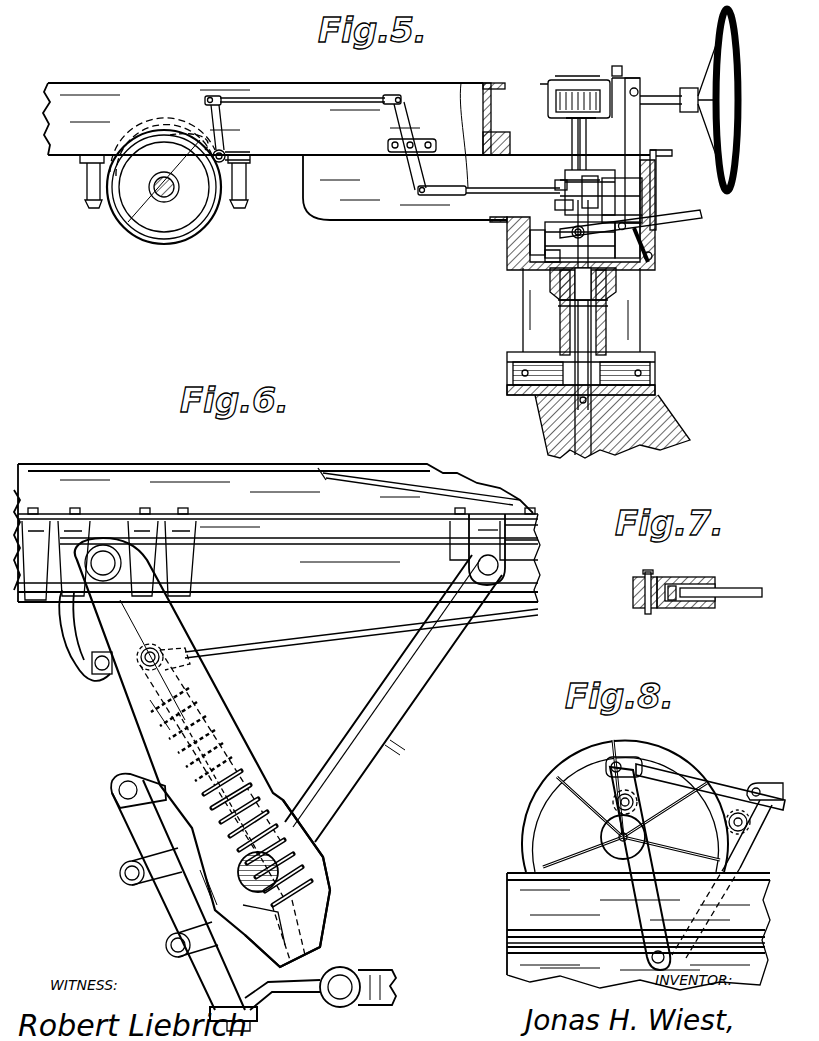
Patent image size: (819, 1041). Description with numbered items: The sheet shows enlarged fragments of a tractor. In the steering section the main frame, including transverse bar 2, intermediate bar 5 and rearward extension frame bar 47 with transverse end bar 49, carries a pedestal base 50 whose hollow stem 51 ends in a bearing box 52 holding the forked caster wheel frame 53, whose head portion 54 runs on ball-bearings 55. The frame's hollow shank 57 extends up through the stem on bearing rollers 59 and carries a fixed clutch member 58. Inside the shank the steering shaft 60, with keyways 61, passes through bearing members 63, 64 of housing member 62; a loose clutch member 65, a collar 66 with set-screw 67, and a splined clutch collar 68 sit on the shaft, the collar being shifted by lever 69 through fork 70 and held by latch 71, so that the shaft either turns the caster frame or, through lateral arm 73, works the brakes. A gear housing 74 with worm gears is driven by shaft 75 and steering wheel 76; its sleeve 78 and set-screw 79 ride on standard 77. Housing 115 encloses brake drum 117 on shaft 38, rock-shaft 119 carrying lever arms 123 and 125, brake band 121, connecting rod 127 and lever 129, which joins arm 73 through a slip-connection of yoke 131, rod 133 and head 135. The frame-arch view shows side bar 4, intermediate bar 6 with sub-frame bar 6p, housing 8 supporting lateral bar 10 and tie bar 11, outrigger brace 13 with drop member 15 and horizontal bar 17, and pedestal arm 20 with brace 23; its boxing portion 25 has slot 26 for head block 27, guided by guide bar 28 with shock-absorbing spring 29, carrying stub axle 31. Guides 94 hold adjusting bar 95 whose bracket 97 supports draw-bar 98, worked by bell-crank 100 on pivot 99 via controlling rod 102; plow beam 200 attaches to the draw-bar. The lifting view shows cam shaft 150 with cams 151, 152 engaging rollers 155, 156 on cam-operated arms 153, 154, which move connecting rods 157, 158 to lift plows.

In FIG. 5, the transverse bar 2 is at (488, 83).
In FIG. 6, the side bar 4 is at (240, 468).
In FIG. 8, the side bar 4 is at (507, 900).
In FIG. 5, the intermediate bar 5 is at (105, 96).
In FIG. 6, the intermediate bar 6 is at (275, 515).
In FIG. 8, the intermediate bar 6 is at (507, 936).
In FIG. 6, the sub-frame bar 6p is at (294, 595).
In FIG. 8, the sub-frame bar 6p is at (530, 965).
In FIG. 6, the housing 8 is at (68, 632).
In FIG. 6, the lateral bar 10 is at (105, 560).
In FIG. 6, the tie bar 11 is at (92, 666).
In FIG. 6, the outrigger brace 13 is at (470, 514).
In FIG. 6, the drop member 15 is at (506, 548).
In FIG. 6, the horizontal bar 17 is at (495, 572).
In FIG. 6, the pedestal arm 20 is at (160, 660).
In FIG. 6, the arm brace 23 is at (370, 700).
In FIG. 6, the boxing portion 25 is at (312, 900).
In FIG. 6, the longitudinal slot 26 is at (262, 770).
In FIG. 6, the head block 27 is at (278, 875).
In FIG. 6, the guide bar 28 is at (262, 790).
In FIG. 6, the spring 29 is at (232, 756).
In FIG. 6, the stub axle 31 is at (280, 915).
In FIG. 5, the shaft 38 is at (163, 198).
In FIG. 5, the extension frame bar 47 is at (378, 220).
In FIG. 5, the transverse end bar 49 is at (657, 164).
In FIG. 5, the pedestal base 50 is at (545, 240).
In FIG. 5, the hollow stem 51 is at (560, 324).
In FIG. 5, the bearing box 52 is at (507, 372).
In FIG. 5, the forked caster wheel frame 53 is at (650, 425).
In FIG. 5, the head portion 54 is at (645, 400).
In FIG. 5, the ball-bearings 55 is at (656, 377).
In FIG. 5, the hollow shank 57 is at (576, 343).
In FIG. 5, the clutch member 58 is at (620, 285).
In FIG. 5, the bearing rollers 59 is at (612, 300).
In FIG. 5, the steering shaft 60 is at (572, 137).
In FIG. 5, the keyways 61 is at (566, 122).
In FIG. 5, the housing member 62 is at (648, 260).
In FIG. 5, the bearing member 63 is at (565, 172).
In FIG. 5, the bearing member 64 is at (645, 190).
In FIG. 5, the clutch member 65 is at (555, 212).
In FIG. 5, the collar 66 is at (592, 178).
In FIG. 5, the set-screw 67 is at (555, 184).
In FIG. 5, the clutch collar 68 is at (545, 252).
In FIG. 5, the shifting and controlling lever 69 is at (702, 216).
In FIG. 5, the fork 70 is at (530, 248).
In FIG. 5, the latch 71 is at (646, 242).
In FIG. 5, the lateral arm 73 is at (556, 200).
In FIG. 5, the gear housing 74 is at (548, 100).
In FIG. 5, the shaft 75 is at (663, 96).
In FIG. 5, the steering wheel 76 is at (739, 86).
In FIG. 5, the standard 77 is at (641, 130).
In FIG. 5, the sleeve 78 is at (637, 88).
In FIG. 5, the set-screw 79 is at (650, 90).
In FIG. 6, the guides 94 is at (182, 922).
In FIG. 6, the adjusting bar 95 is at (135, 842).
In FIG. 6, the bracket 97 is at (308, 995).
In FIG. 6, the draw-bar 98 is at (345, 1000).
In FIG. 6, the pivot 99 is at (235, 702).
In FIG. 6, the bell-crank 100 is at (145, 772).
In FIG. 6, the controlling rod 102 is at (340, 632).
In FIG. 5, the housing 115 is at (87, 182).
In FIG. 5, the brake drum 117 is at (130, 232).
In FIG. 5, the rock-shaft 119 is at (226, 160).
In FIG. 5, the brake band 121 is at (198, 230).
In FIG. 5, the lever arm 123 is at (112, 215).
In FIG. 5, the lever arm 125 is at (205, 100).
In FIG. 5, the connecting rod 127 is at (293, 98).
In FIG. 5, the lever 129 is at (414, 118).
In FIG. 7, the lever 129 is at (633, 598).
In FIG. 5, the yoke 131 is at (440, 195).
In FIG. 7, the yoke 131 is at (696, 577).
In FIG. 5, the rod 133 is at (462, 88).
In FIG. 7, the rod 133 is at (735, 588).
In FIG. 7, the head 135 is at (670, 602).
In FIG. 8, the cam shaft 150 is at (620, 838).
In FIG. 8, the cam 151 is at (527, 825).
In FIG. 8, the cam 152 is at (642, 768).
In FIG. 8, the cam-operated arm 153 is at (655, 858).
In FIG. 8, the cam-operated arm 154 is at (738, 848).
In FIG. 8, the roller 155 is at (636, 802).
In FIG. 8, the roller 156 is at (747, 824).
In FIG. 8, the connecting rod 157 is at (718, 790).
In FIG. 8, the connecting rod 158 is at (773, 785).
In FIG. 6, the plow beam 200 is at (383, 970).